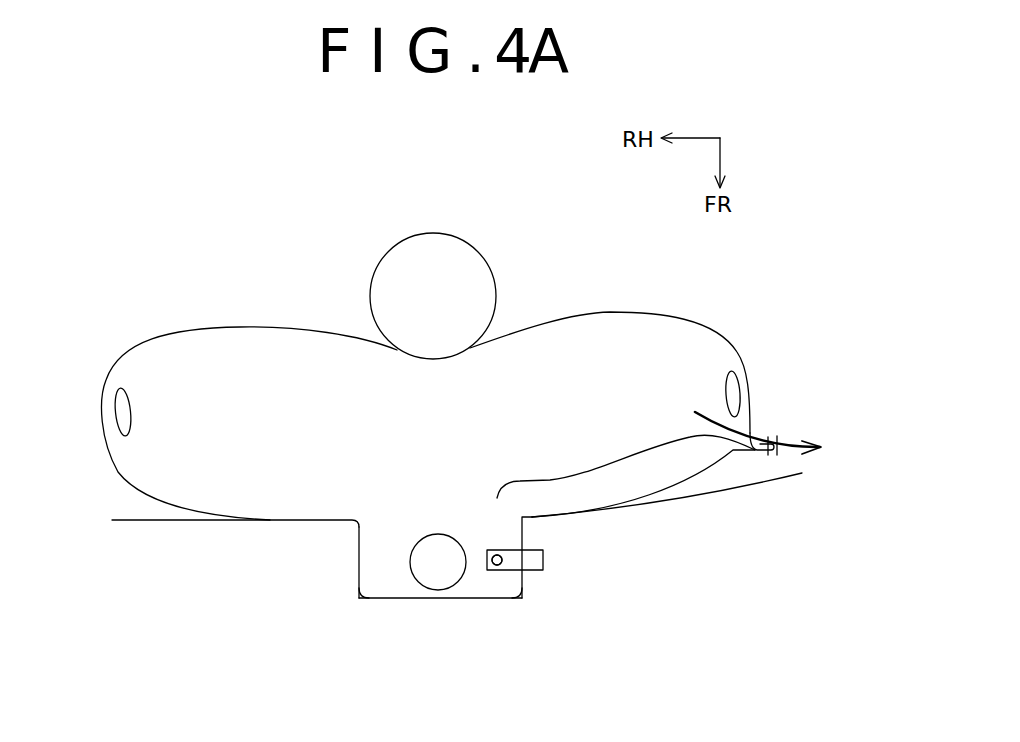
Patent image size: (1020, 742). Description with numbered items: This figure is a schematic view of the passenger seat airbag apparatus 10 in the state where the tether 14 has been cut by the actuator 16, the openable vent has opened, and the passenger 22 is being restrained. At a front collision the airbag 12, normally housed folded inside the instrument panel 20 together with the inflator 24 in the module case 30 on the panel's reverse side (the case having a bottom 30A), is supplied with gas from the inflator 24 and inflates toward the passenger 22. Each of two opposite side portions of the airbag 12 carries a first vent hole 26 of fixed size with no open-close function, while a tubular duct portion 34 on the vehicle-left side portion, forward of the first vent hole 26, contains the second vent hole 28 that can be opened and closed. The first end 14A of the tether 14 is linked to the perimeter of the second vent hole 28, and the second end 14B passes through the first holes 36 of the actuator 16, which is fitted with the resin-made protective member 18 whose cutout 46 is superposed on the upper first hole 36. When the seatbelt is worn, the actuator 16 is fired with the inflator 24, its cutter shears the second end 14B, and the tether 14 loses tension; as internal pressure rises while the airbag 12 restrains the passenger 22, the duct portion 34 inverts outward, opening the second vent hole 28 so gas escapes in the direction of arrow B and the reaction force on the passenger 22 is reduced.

The passenger seat airbag apparatus 10 is at (256, 307).
The airbag 12 is at (670, 313).
The tether 14 is at (612, 463).
The first end of the tether 14A is at (750, 455).
The second end of the tether 14B is at (497, 498).
The actuator 16 is at (553, 560).
The resin-made protective member 18 is at (490, 547).
The instrument panel 20 is at (132, 520).
The passenger 22 is at (497, 297).
The inflator 24 is at (428, 533).
The first vent hole 26 is at (126, 396).
The second vent hole 28 is at (783, 440).
The module case 30 is at (356, 578).
The bottom wall of case 30A is at (388, 600).
The duct portion 34 is at (770, 433).
The first holes 36 is at (497, 560).
The cutout 46 is at (495, 568).
The arrow B is at (812, 455).